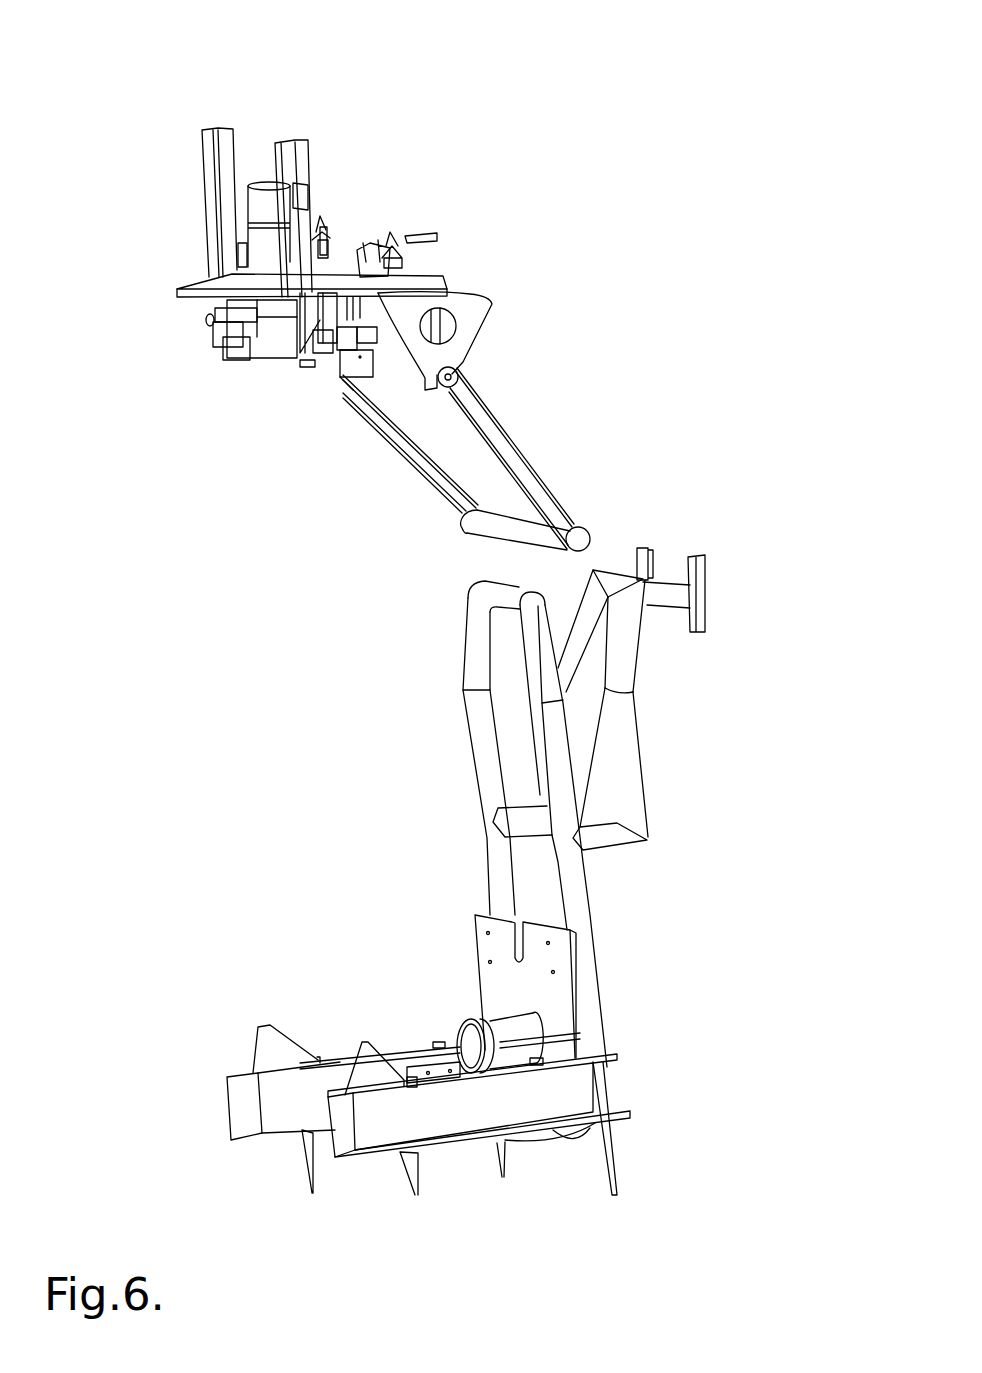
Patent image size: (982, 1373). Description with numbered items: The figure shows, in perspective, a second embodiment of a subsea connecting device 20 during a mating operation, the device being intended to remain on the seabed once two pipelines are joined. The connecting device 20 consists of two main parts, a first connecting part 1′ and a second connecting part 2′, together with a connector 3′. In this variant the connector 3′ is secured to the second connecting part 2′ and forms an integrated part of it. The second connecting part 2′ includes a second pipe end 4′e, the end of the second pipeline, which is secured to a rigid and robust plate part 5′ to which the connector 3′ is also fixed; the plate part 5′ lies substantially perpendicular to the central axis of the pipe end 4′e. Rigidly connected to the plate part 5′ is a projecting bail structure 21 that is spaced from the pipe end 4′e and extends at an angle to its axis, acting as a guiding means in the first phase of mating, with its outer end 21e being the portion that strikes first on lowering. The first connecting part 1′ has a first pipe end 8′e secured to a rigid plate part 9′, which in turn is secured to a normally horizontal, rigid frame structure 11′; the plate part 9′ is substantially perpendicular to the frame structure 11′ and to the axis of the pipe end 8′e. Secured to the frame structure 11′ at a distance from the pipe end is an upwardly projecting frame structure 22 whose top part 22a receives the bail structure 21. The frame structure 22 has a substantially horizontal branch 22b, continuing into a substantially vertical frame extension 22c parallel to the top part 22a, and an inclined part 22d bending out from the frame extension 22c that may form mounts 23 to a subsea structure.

The connecting device 20 is at (700, 188).
The second connecting part 2′ is at (352, 242).
The connector 3′ is at (195, 348).
The second pipe end 4′e is at (257, 203).
The plate part 5′ is at (178, 288).
The bail structure 21 is at (596, 515).
The outer end of the bail structure 21e is at (497, 530).
The frame structure 22 is at (460, 835).
The top part 22a is at (472, 640).
The branch 22b is at (612, 840).
The frame extension 22c is at (632, 737).
The inclined part 22d is at (640, 637).
The mounts 23 is at (707, 569).
The first connecting part 1′ is at (248, 1010).
The first pipe end 8′e is at (457, 1028).
The plate part 9′ is at (570, 965).
The frame structure 11′ is at (598, 1102).